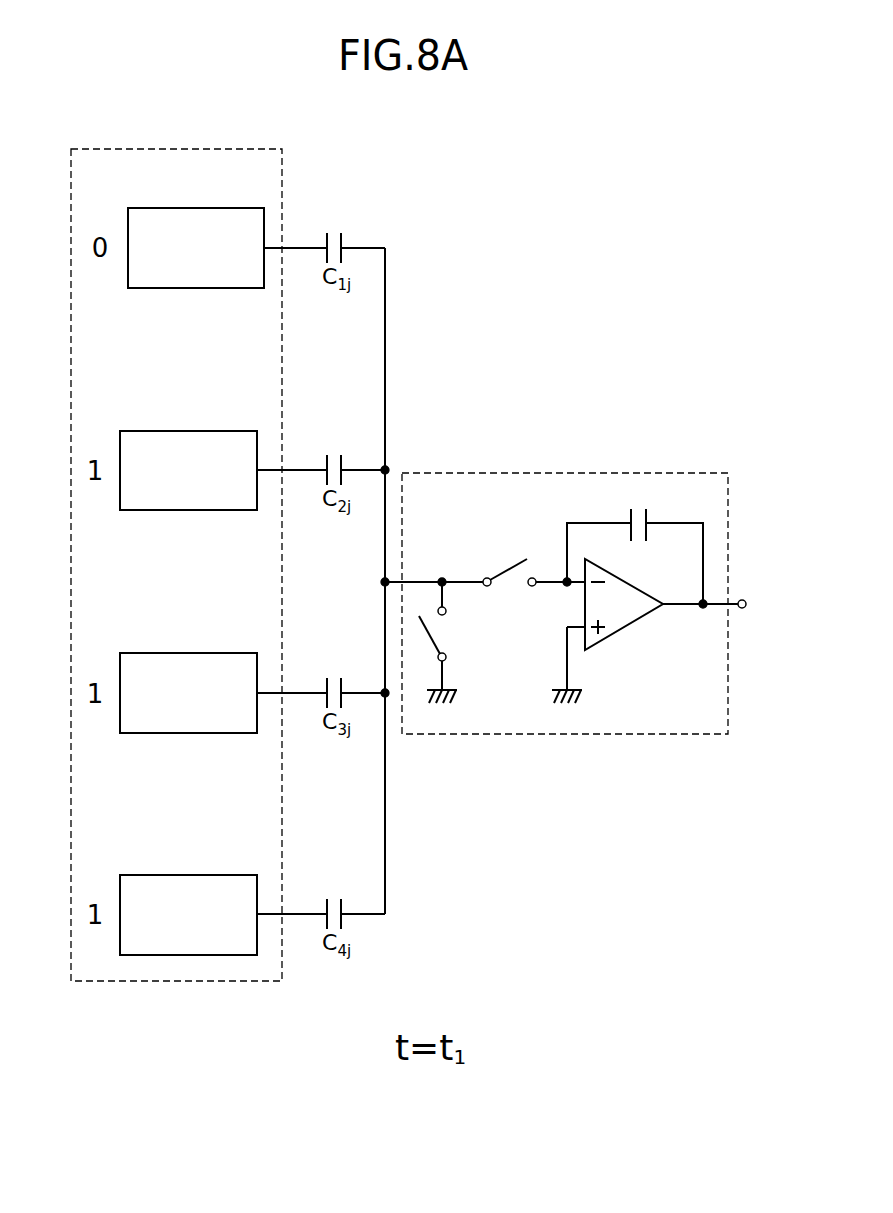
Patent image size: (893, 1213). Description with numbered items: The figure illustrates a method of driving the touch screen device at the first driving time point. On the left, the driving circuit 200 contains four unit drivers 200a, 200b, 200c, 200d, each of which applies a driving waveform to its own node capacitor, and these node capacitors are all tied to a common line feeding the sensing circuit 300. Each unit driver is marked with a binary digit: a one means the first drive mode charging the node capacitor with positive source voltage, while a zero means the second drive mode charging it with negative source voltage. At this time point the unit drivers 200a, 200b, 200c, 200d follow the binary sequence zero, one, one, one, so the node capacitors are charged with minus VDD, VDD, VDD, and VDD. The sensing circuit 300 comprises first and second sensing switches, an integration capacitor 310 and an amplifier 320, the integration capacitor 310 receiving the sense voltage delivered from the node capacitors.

The driving circuit 200 is at (176, 539).
The unit driver 200a is at (196, 222).
The unit driver 200b is at (188, 444).
The unit driver 200c is at (188, 666).
The unit driver 200d is at (188, 888).
The sensing circuit 300 is at (565, 632).
The integration capacitor 310 is at (635, 542).
The amplifier 320 is at (629, 611).